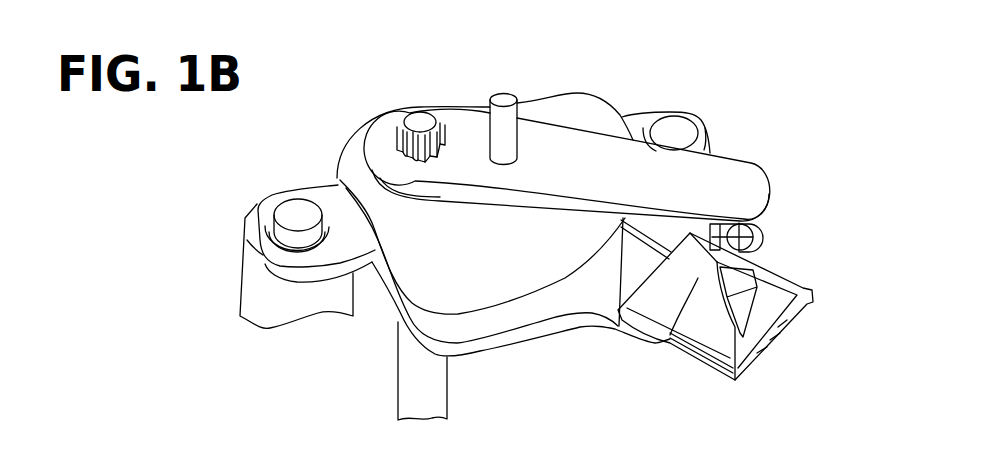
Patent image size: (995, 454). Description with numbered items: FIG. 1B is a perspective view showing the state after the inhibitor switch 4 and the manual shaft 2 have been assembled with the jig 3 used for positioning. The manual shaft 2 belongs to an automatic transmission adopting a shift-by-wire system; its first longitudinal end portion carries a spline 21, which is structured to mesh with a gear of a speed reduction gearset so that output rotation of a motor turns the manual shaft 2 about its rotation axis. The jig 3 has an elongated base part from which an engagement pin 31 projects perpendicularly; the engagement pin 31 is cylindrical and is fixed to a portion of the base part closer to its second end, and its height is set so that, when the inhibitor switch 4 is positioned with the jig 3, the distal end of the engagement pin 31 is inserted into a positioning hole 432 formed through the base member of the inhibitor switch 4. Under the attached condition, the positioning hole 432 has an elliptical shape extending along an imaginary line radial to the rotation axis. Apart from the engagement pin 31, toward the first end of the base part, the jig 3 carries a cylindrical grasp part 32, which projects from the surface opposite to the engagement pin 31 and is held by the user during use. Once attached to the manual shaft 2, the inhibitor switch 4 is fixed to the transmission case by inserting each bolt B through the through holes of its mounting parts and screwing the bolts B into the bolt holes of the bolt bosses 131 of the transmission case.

The manual shaft 2 is at (458, 383).
The jig 3 is at (760, 152).
The inhibitor switch 4 is at (562, 346).
The spline 21 is at (417, 117).
The engagement pin 31 is at (745, 230).
The grasp part 32 is at (503, 97).
The bolt boss 131 is at (262, 288).
The positioning hole 432 is at (764, 246).
The bolt B is at (294, 208).